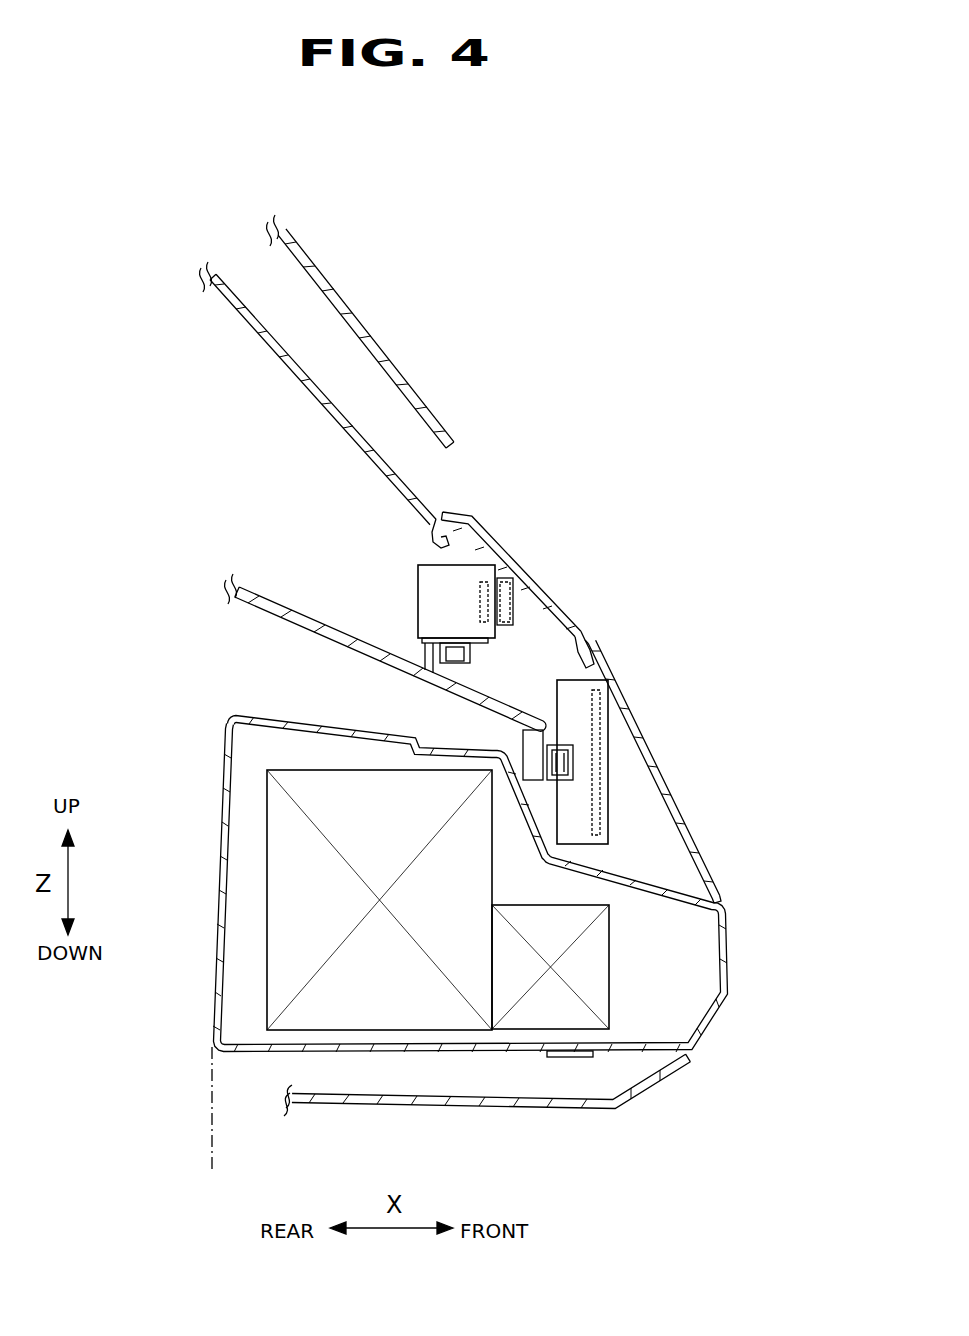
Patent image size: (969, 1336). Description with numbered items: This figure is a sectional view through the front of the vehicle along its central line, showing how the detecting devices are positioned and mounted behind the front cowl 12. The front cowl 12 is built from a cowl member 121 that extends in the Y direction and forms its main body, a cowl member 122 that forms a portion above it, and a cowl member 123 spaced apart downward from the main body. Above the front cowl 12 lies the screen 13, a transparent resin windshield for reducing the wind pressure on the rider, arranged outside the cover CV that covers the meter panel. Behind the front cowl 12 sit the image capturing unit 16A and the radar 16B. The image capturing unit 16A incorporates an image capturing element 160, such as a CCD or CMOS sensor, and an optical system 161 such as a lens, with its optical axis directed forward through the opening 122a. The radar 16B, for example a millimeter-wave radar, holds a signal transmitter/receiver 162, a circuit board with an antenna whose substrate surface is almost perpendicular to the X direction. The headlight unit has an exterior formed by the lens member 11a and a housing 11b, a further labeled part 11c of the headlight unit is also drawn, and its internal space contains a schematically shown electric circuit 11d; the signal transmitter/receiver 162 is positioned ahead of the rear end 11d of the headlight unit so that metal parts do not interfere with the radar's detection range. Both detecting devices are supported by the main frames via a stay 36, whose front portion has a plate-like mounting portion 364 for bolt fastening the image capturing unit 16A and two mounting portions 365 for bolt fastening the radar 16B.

The lens member 11a is at (728, 940).
The housing 11b is at (225, 755).
The rear wall of housing 11c is at (268, 992).
The electric circuit / rear end of headlight unit 11d is at (212, 1165).
The front cowl 12 is at (542, 787).
The cowl member 121 is at (666, 748).
The cowl member 122 is at (511, 546).
The opening 122a is at (523, 578).
The cowl member 123 is at (680, 1063).
The screen 13 is at (385, 350).
The cover CV is at (312, 386).
The stay 36 is at (292, 598).
The image capturing unit 16A is at (497, 606).
The radar 16B is at (657, 760).
The image capturing element 160 is at (503, 552).
The optical system 161 is at (513, 600).
The signal transmitter/receiver 162 is at (602, 808).
The mounting portion 364 is at (480, 645).
The mounting portion 365 is at (533, 748).